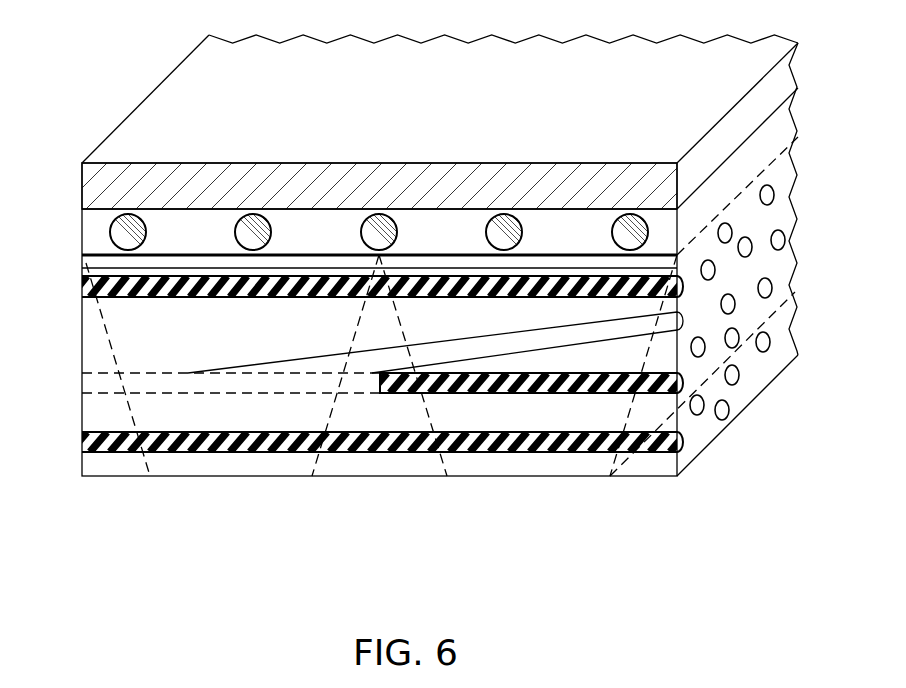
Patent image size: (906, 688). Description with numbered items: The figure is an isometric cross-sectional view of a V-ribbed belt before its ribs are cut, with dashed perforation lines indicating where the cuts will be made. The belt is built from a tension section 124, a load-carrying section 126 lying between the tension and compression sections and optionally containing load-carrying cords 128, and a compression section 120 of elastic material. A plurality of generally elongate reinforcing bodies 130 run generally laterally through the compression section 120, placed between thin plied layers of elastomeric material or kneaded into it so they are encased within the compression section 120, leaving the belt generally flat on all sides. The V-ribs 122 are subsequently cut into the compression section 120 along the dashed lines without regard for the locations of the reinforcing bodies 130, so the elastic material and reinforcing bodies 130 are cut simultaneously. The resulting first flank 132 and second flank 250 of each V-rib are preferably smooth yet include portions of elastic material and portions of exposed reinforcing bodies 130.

The compression section 120 is at (787, 177).
The V-ribs 122 is at (515, 477).
The tension section 124 is at (90, 189).
The load-carrying section 126 is at (93, 235).
The load-carrying cords 128 is at (115, 236).
The reinforcing bodies 130 is at (739, 377).
The first longitudinally extending flank 132 is at (648, 417).
The second longitudinally extending flank 250 is at (427, 415).